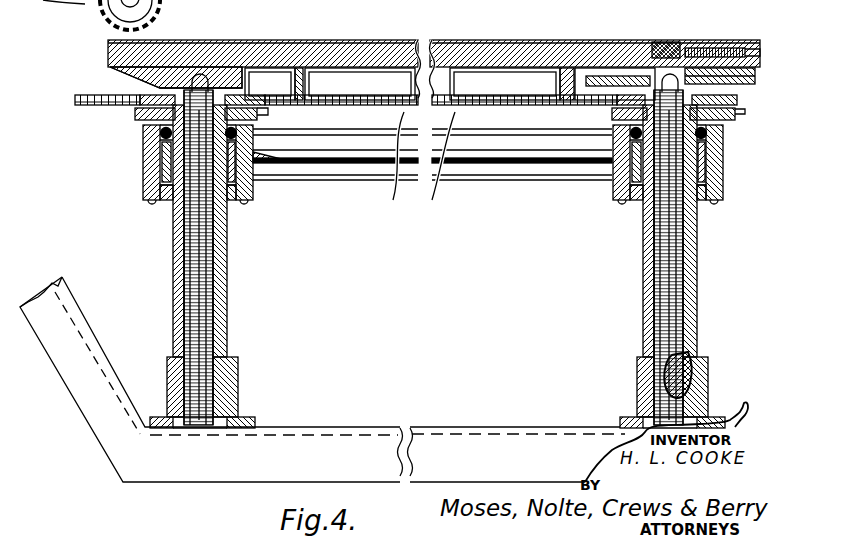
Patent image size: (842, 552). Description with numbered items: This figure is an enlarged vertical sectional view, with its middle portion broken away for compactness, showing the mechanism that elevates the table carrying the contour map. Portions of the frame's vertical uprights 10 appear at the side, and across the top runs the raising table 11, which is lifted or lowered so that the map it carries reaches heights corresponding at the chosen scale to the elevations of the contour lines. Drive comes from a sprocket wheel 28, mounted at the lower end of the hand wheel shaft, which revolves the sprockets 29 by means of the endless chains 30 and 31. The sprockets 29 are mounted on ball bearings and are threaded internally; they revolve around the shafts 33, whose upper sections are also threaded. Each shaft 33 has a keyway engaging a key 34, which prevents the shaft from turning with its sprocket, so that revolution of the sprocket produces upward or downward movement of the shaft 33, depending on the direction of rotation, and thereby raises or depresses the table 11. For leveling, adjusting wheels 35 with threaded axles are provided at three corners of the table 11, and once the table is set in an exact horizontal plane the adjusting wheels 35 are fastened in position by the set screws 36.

The vertical uprights 10 is at (47, 0).
The raising table 11 is at (108, 62).
The sprocket wheel 28 is at (159, 15).
The sprockets 29 is at (140, 118).
The endless chain 30 is at (108, 103).
The endless chain 31 is at (398, 190).
The shafts 33 is at (176, 246).
The key 34 is at (172, 298).
The adjusting wheels 35 is at (722, 84).
The set screws 36 is at (742, 42).